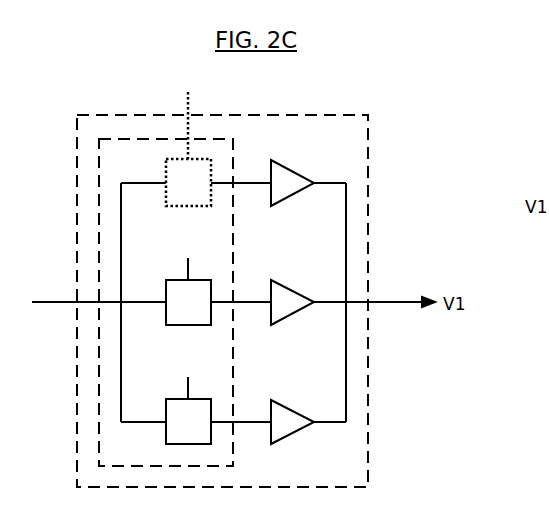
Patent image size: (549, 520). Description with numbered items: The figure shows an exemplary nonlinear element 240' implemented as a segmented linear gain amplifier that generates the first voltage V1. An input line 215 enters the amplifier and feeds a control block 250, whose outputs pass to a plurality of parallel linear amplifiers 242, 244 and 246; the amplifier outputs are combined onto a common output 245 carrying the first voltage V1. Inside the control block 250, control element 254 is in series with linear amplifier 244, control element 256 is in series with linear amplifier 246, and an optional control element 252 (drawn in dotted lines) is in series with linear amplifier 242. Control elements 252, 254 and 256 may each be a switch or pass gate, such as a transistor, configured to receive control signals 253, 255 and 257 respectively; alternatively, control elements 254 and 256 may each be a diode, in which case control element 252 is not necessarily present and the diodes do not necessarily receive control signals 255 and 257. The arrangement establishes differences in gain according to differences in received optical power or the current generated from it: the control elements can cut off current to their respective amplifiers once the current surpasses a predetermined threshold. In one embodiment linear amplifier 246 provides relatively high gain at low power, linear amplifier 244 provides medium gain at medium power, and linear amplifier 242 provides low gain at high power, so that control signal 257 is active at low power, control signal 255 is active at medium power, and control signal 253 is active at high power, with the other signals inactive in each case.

The input signal line 215 is at (99, 302).
The segmented linear gain amplifier 240' is at (258, 301).
The linear amplifier 242 is at (303, 171).
The linear amplifier 244 is at (302, 292).
The output line 245 is at (402, 298).
The linear amplifier 246 is at (303, 404).
The control block 250 is at (133, 137).
The control element 252 is at (172, 210).
The control signal 253 is at (192, 97).
The control element 254 is at (172, 330).
The control signal 255 is at (187, 265).
The control element 256 is at (165, 442).
The control signal 257 is at (188, 382).